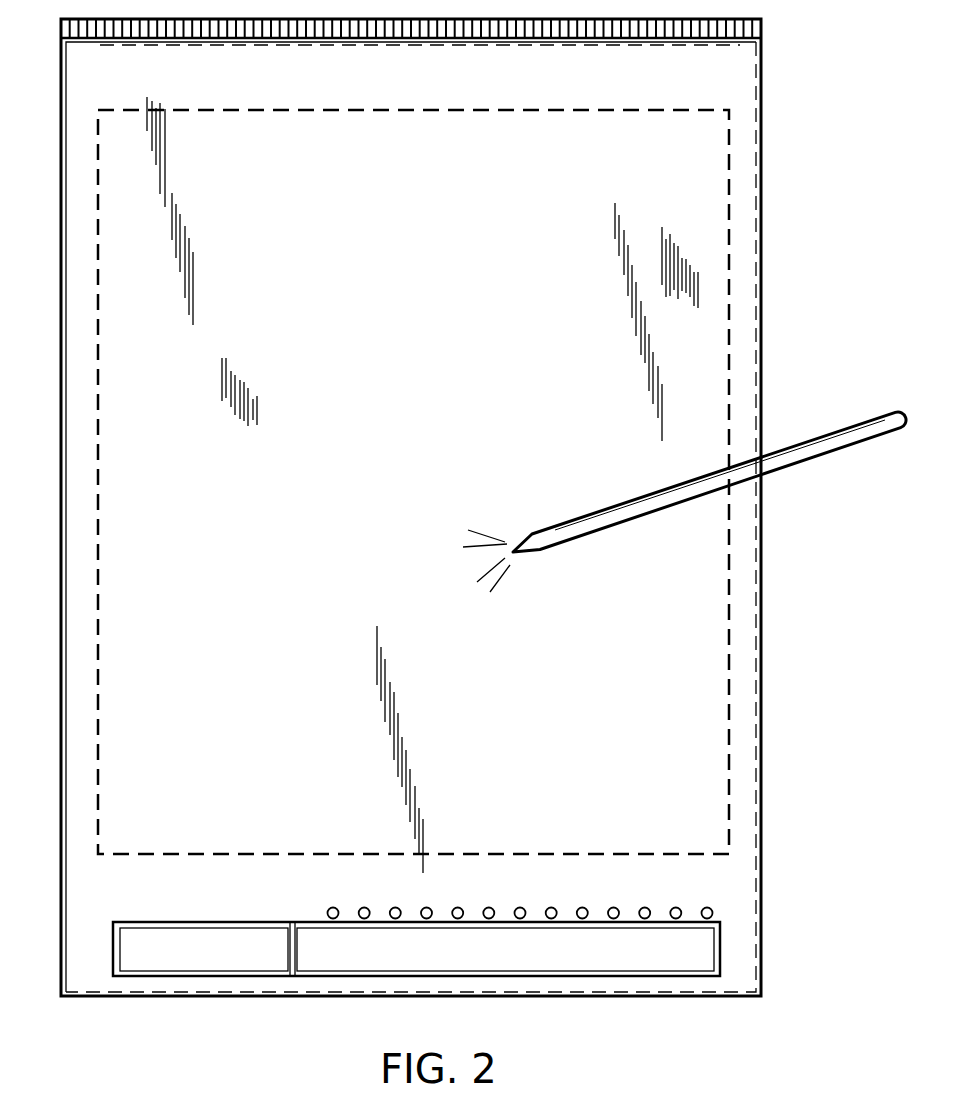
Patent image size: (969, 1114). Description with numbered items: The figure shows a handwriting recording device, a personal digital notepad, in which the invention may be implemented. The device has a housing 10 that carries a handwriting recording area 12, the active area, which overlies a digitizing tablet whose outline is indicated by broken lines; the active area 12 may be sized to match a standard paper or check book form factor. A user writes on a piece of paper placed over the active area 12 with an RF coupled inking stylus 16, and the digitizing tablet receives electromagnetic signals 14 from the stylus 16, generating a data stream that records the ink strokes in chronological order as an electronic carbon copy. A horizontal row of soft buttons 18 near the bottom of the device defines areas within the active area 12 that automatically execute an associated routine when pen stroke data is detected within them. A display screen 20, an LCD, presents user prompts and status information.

The housing 10 is at (62, 62).
The handwriting recording area 12 is at (135, 218).
The electromagnetic signals 14 is at (503, 573).
The inking stylus 16 is at (822, 457).
The soft buttons 18 is at (712, 908).
The display screen 20 is at (145, 965).